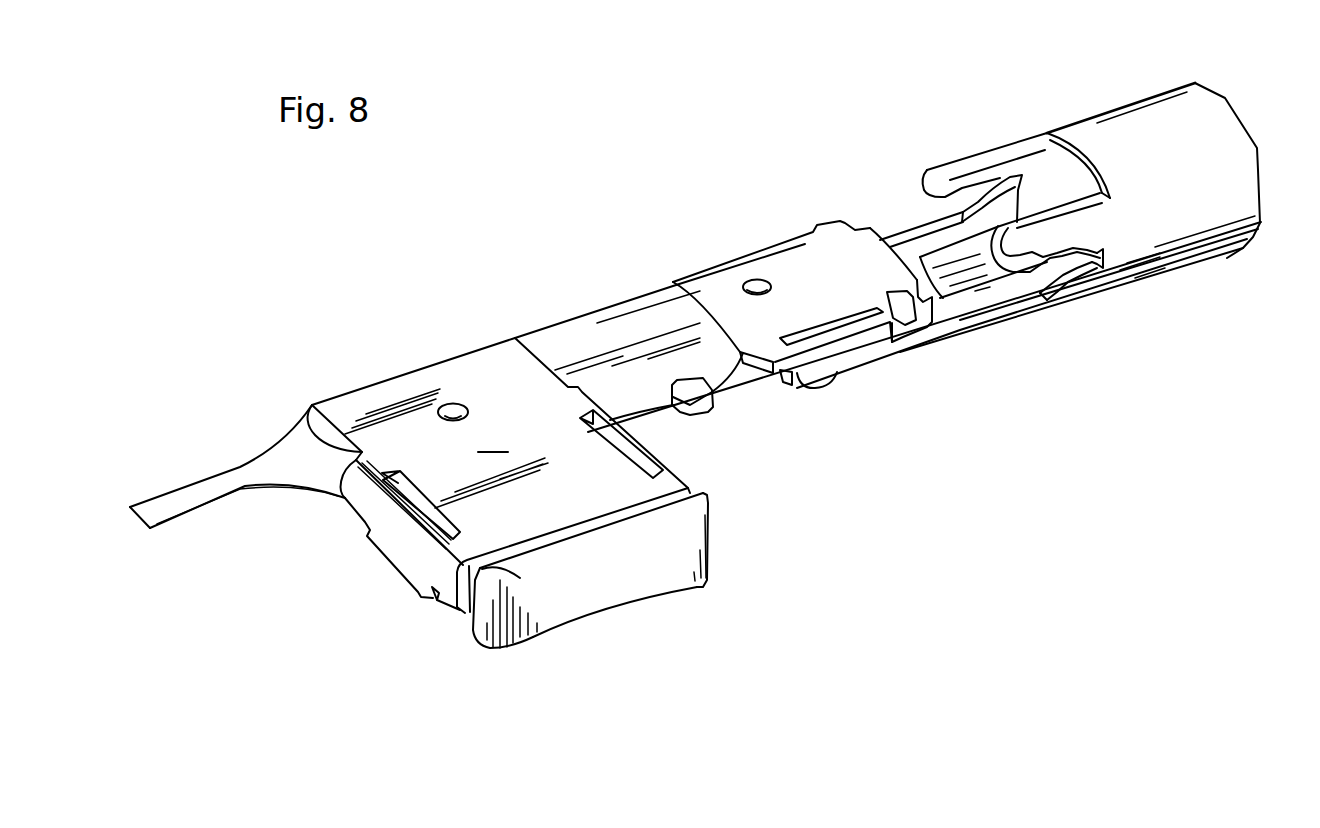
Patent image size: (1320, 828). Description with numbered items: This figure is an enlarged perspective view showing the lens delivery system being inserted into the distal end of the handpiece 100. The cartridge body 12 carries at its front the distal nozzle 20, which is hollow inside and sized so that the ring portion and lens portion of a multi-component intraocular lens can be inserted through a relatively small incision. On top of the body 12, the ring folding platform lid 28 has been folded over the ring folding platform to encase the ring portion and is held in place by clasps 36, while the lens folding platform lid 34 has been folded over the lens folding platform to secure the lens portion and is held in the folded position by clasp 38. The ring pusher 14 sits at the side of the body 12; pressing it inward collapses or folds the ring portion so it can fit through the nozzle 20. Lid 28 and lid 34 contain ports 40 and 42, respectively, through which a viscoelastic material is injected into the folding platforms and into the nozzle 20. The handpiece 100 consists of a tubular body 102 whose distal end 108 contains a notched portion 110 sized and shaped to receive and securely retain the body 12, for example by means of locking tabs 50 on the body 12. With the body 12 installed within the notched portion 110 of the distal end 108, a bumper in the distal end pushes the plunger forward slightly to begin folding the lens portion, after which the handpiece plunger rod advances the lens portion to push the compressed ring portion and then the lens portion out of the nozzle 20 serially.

The cartridge body 12 is at (578, 343).
The ring pusher 14 is at (628, 597).
The distal nozzle 20 is at (215, 487).
The ring folding platform lid 28 is at (501, 475).
The lens folding platform lid 34 is at (822, 267).
The clasps 36 is at (420, 588).
The clasp 38 is at (843, 363).
The port 40 is at (453, 404).
The port 42 is at (757, 280).
The locking tabs 50 is at (693, 415).
The handpiece 100 is at (885, 114).
The tubular body 102 is at (1127, 290).
The distal end 108 is at (987, 333).
The notched portion 110 is at (953, 206).